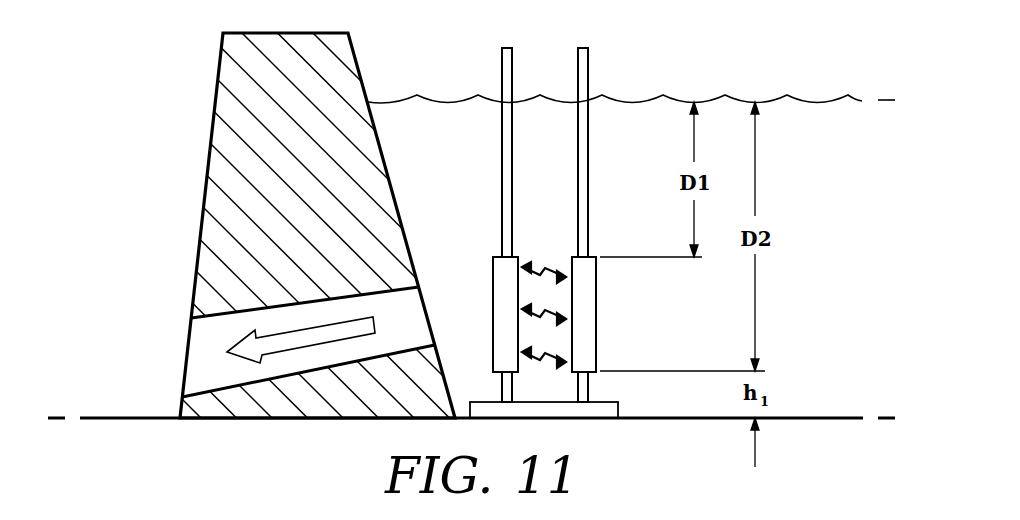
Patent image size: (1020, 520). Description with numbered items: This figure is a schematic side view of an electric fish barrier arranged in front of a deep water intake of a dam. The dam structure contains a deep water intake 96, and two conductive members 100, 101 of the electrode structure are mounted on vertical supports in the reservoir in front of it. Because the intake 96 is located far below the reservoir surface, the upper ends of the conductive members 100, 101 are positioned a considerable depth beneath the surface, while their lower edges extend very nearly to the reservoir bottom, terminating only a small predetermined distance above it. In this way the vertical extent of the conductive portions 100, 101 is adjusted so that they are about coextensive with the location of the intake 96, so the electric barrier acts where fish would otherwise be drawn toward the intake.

The deep water intake 96 is at (218, 316).
The conductive member 100 is at (502, 272).
The conductive member 101 is at (583, 295).